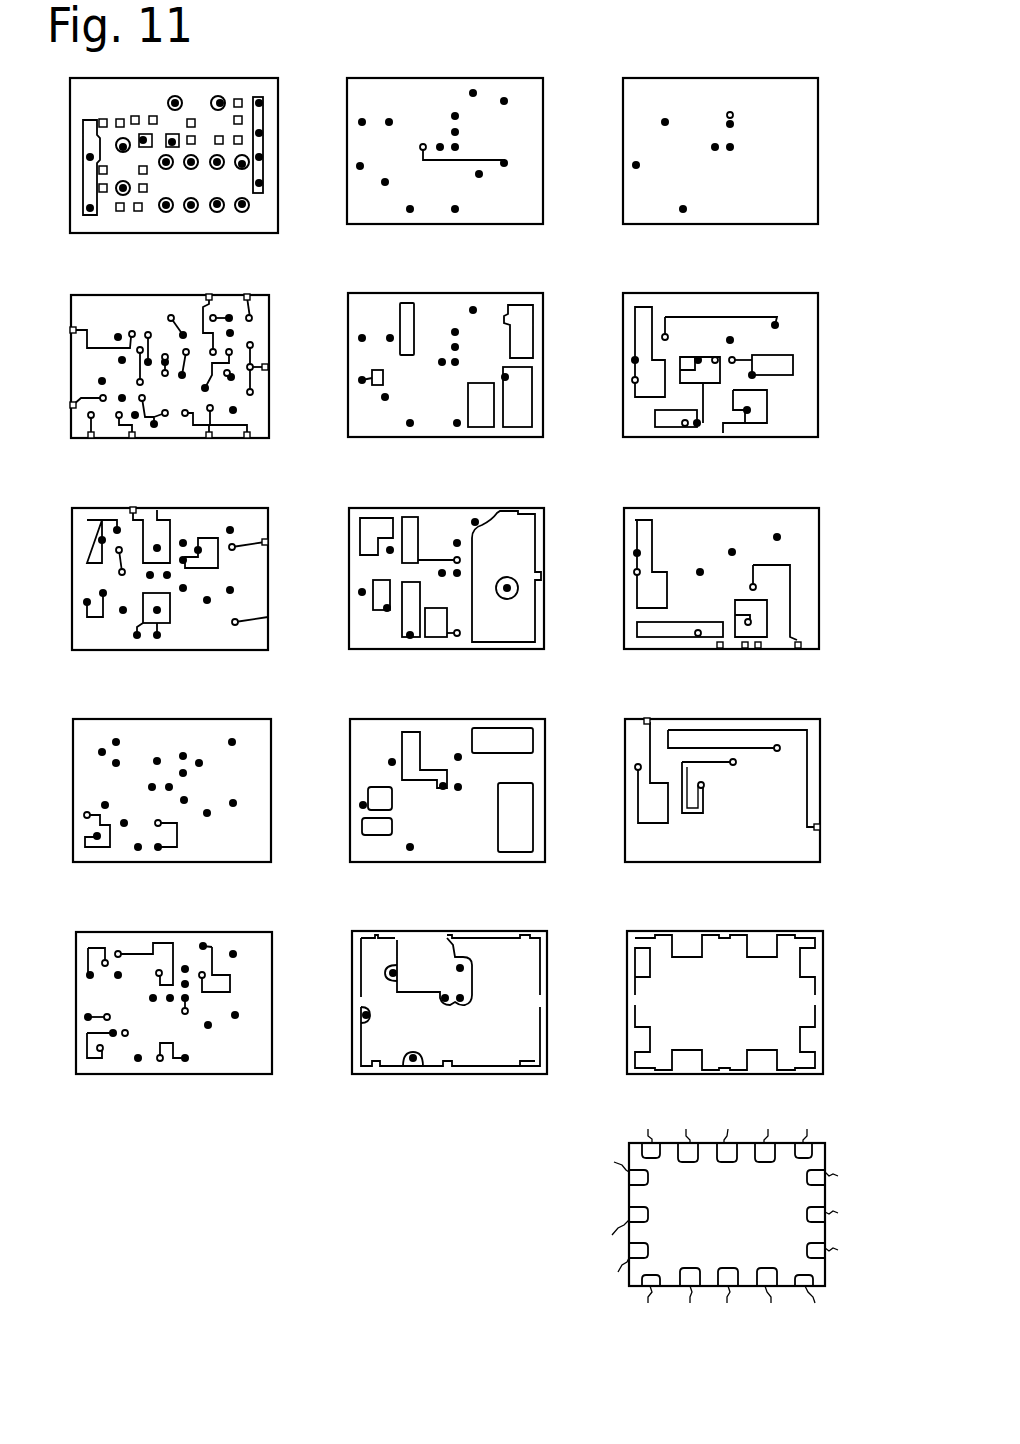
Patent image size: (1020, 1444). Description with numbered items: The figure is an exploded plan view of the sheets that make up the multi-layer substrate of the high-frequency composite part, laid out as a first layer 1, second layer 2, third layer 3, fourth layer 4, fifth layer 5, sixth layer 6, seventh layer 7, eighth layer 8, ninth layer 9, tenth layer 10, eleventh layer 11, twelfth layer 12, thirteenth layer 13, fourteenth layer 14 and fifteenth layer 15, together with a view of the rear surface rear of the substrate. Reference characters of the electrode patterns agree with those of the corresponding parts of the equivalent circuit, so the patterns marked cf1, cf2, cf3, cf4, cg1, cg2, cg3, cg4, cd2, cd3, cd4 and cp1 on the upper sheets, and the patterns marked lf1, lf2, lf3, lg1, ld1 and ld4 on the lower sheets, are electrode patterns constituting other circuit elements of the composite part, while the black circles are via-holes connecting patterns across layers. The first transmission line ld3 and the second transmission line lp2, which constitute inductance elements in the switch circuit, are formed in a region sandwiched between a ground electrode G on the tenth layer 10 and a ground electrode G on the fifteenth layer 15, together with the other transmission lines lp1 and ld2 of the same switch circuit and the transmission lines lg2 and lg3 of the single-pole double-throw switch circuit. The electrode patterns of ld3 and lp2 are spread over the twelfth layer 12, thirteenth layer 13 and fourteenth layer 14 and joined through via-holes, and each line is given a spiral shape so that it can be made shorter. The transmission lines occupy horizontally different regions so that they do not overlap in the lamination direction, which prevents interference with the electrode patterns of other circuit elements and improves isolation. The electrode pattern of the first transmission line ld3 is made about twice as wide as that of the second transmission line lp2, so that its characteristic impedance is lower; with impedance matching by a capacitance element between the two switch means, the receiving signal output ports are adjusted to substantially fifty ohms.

The first dielectric layer 1 is at (154, 155).
The second dielectric layer 2 is at (149, 366).
The third dielectric layer 3 is at (149, 579).
The fourth dielectric layer 4 is at (150, 790).
The fifth dielectric layer 5 is at (151, 1003).
The sixth dielectric layer 6 is at (425, 151).
The seventh dielectric layer 7 is at (425, 365).
The eighth dielectric layer 8 is at (426, 578).
The ninth dielectric layer 9 is at (426, 790).
The tenth layer 10 is at (423, 1002).
The eleventh dielectric layer 11 is at (698, 151).
The twelfth layer 12 is at (698, 365).
The thirteenth layer 13 is at (698, 578).
The fourteenth layer 14 is at (699, 790).
The fifteenth layer 15 is at (700, 1002).
The capacitor electrode cf1 is at (370, 518).
The capacitor electrode cf2 is at (400, 303).
The capacitor electrode cf3 is at (497, 728).
The capacitor electrode cf4 is at (412, 732).
The capacitor electrode cg1 is at (373, 835).
The capacitor electrode cg2 is at (378, 610).
The capacitor electrode cg3 is at (375, 385).
The capacitor electrode cg4 is at (514, 427).
The capacitor electrode cd2 is at (436, 637).
The capacitor electrode cd3 is at (411, 637).
The capacitor electrode cd4 is at (518, 305).
The capacitor electrode cp1 is at (474, 427).
The inductor line lf1 is at (160, 510).
The inductor line lf2 is at (96, 520).
The inductor line lf3 is at (207, 538).
The inductor line lg1 is at (93, 617).
The transmission line lg2 is at (645, 307).
The transmission line lg3 is at (703, 317).
The inductor line ld1 is at (170, 623).
The transmission line ld2 is at (660, 427).
The first transmission line ld3 is at (703, 423).
The inductor line ld4 is at (175, 1060).
The transmission line lp1 is at (753, 423).
The second transmission line lp2 is at (787, 355).
The ground electrode G is at (503, 513).
The rear surface terminal layout rear is at (679, 1228).